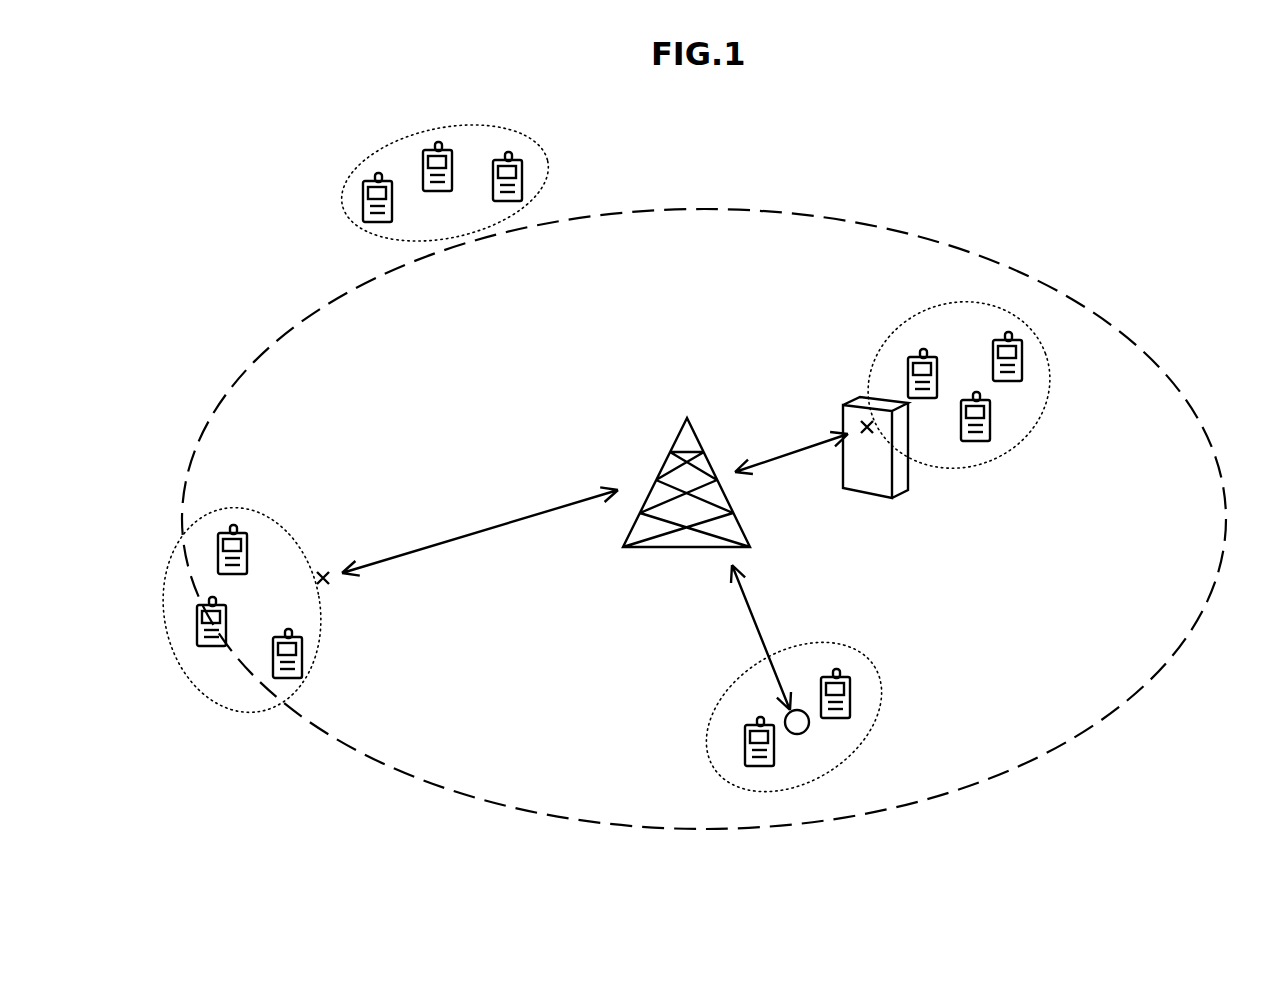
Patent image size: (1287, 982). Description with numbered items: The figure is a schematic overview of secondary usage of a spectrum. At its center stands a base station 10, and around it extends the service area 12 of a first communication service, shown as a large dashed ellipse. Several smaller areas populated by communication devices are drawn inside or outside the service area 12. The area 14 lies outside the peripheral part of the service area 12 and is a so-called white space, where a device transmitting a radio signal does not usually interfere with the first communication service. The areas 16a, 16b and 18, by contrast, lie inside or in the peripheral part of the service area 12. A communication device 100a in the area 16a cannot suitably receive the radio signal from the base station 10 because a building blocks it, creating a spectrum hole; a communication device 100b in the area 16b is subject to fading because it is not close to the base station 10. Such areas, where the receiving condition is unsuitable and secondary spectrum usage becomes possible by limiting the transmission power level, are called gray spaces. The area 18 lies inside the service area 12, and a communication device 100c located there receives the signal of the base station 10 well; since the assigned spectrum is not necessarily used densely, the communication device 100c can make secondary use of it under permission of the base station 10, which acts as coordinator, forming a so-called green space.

The base station 10 is at (687, 418).
The service area 12 is at (1182, 395).
The area 14 is at (547, 160).
The area 16a is at (978, 384).
The area 16b is at (268, 603).
The area 18 is at (807, 712).
The communication device 100a is at (1022, 367).
The communication device 100b is at (302, 657).
The communication device 100c is at (850, 700).